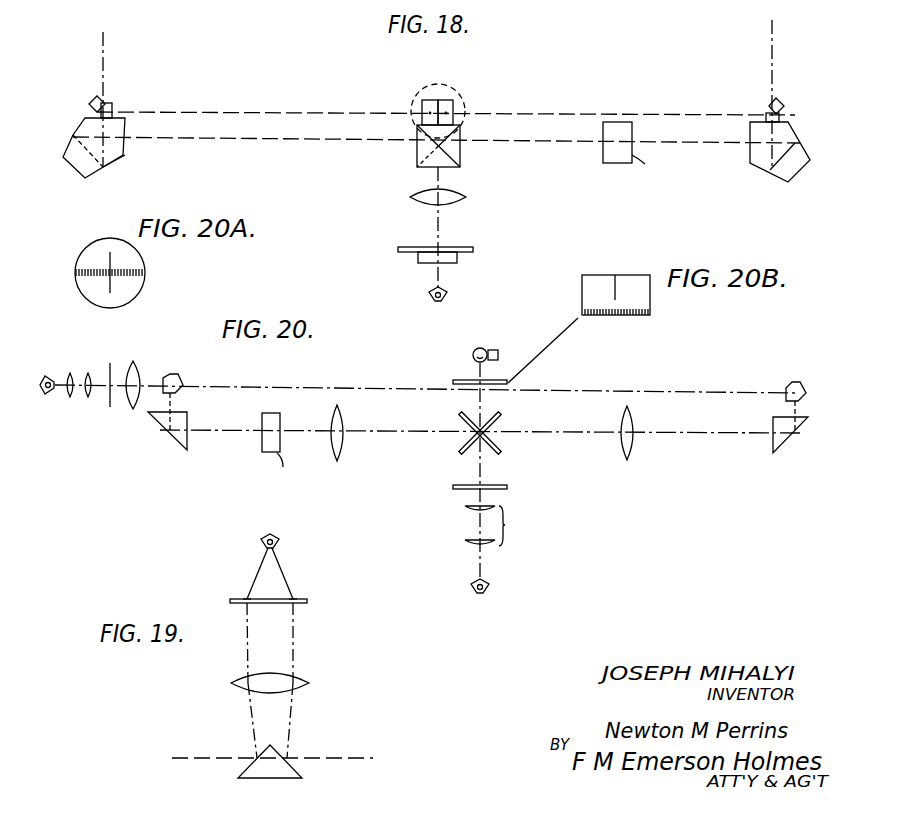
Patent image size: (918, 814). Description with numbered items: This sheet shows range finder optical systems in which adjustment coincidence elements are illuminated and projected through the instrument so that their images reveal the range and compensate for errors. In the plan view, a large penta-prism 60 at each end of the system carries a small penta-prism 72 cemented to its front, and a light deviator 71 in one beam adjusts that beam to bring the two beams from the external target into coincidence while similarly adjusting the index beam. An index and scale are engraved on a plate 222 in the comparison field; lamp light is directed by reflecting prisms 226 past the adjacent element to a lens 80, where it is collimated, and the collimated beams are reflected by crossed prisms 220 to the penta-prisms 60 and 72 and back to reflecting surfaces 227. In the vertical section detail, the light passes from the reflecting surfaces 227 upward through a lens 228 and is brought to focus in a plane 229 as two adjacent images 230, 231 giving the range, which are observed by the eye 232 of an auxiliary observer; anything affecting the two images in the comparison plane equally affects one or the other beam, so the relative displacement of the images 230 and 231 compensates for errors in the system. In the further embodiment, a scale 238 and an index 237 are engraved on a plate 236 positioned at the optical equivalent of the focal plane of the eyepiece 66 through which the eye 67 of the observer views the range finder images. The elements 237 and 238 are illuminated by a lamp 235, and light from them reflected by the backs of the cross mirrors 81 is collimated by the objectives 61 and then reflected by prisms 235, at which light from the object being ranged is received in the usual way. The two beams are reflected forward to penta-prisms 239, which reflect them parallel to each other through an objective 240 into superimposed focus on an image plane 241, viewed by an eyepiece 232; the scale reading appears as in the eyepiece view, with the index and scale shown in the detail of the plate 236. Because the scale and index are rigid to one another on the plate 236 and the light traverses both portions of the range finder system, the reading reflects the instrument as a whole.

In FIG. 18, the large penta-prism 60 is at (123, 152).
In FIG. 18, the small penta-prism 72 is at (110, 103).
In FIG. 18, the light deviator 71 is at (608, 163).
In FIG. 20, the light deviator 71 is at (262, 418).
In FIG. 18, the lens 228 is at (418, 91).
In FIG. 19, the lens 228 is at (310, 683).
In FIG. 18, the reflecting surfaces 227 is at (455, 103).
In FIG. 19, the reflecting surfaces 227 is at (288, 773).
In FIG. 18, the crossed prisms 220 is at (462, 152).
In FIG. 18, the lens 80 is at (466, 197).
In FIG. 18, the plate 222 is at (470, 247).
In FIG. 18, the reflecting prisms 226 is at (458, 258).
In FIG. 18, the eye 67 is at (448, 295).
In FIG. 20, the eye 67 is at (492, 587).
In FIG. 20A, the image plane 241 is at (133, 287).
In FIG. 20, the image plane 241 is at (108, 410).
In FIG. 20B, the scale 238 is at (651, 312).
In FIG. 20B, the index 237 is at (616, 300).
In FIG. 20, the eye of auxiliary observer 232 is at (88, 372).
In FIG. 19, the eye of auxiliary observer 232 is at (280, 540).
In FIG. 20, the objective 240 is at (138, 368).
In FIG. 20, the penta-prisms 239 is at (182, 380).
In FIG. 20, the lamp and prisms 235 is at (173, 430).
In FIG. 20, the objectives 61 is at (338, 450).
In FIG. 20, the cross mirrors 81 is at (500, 450).
In FIG. 20, the plate 236 is at (508, 382).
In FIG. 20, the eyepiece 66 is at (498, 526).
In FIG. 19, the plane 229 is at (310, 602).
In FIG. 19, the image 230 is at (247, 598).
In FIG. 19, the image 231 is at (296, 598).